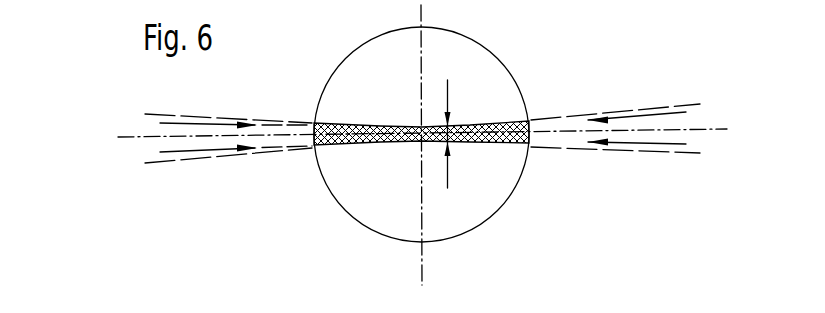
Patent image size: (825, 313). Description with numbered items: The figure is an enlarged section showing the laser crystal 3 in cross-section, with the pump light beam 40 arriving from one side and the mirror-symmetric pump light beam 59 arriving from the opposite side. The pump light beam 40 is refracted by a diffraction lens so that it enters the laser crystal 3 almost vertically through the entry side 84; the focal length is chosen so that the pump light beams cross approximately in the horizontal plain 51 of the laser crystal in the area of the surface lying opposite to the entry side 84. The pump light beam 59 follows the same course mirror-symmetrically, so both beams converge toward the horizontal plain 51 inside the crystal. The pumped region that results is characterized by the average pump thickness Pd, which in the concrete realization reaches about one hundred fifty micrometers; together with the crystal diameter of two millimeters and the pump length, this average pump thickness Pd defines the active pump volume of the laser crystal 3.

The laser crystal 3 is at (345, 83).
The pump light beam 40 is at (228, 151).
The horizontal plain of the laser crystal 51 is at (716, 127).
The pump light beam 59 is at (633, 146).
The entry side 84 is at (311, 145).
The average pump thickness Pd is at (455, 123).